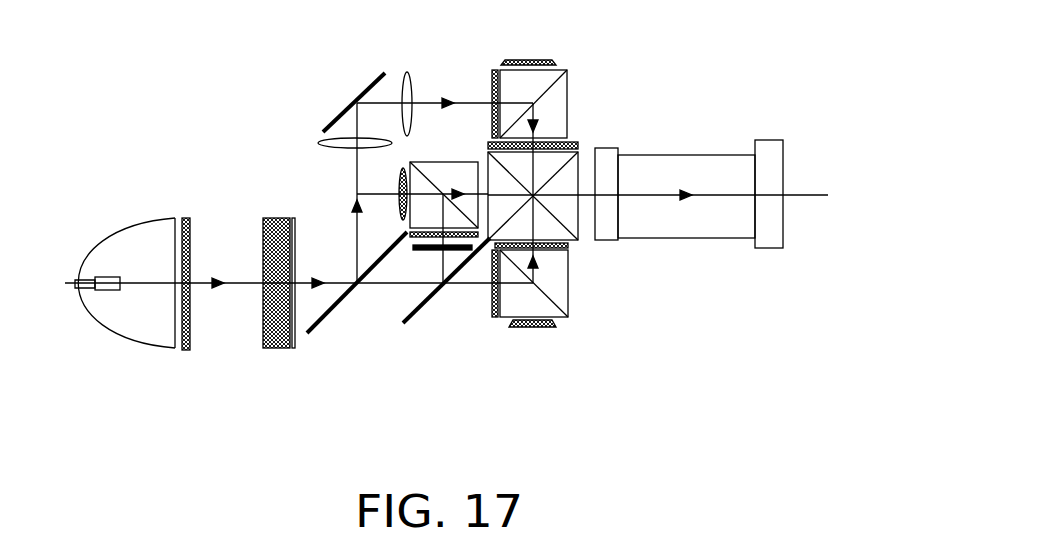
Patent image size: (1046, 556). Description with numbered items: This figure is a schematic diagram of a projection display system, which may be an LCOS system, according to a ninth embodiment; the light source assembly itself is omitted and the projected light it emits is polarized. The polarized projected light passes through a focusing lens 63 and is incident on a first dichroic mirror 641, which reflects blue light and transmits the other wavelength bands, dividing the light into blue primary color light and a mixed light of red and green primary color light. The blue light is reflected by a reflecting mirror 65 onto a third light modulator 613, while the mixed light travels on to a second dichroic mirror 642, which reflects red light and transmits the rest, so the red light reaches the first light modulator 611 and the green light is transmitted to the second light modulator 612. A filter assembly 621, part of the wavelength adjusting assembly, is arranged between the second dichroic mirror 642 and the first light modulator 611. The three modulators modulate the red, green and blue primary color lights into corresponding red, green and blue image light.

The focusing lens 63 is at (291, 347).
The reflecting mirror 65 is at (336, 120).
The first light modulator 611 is at (403, 193).
The second light modulator 612 is at (538, 330).
The third light modulator 613 is at (552, 62).
The filter assembly 621 is at (413, 247).
The first dichroic mirror 641 is at (326, 318).
The second dichroic mirror 642 is at (408, 323).